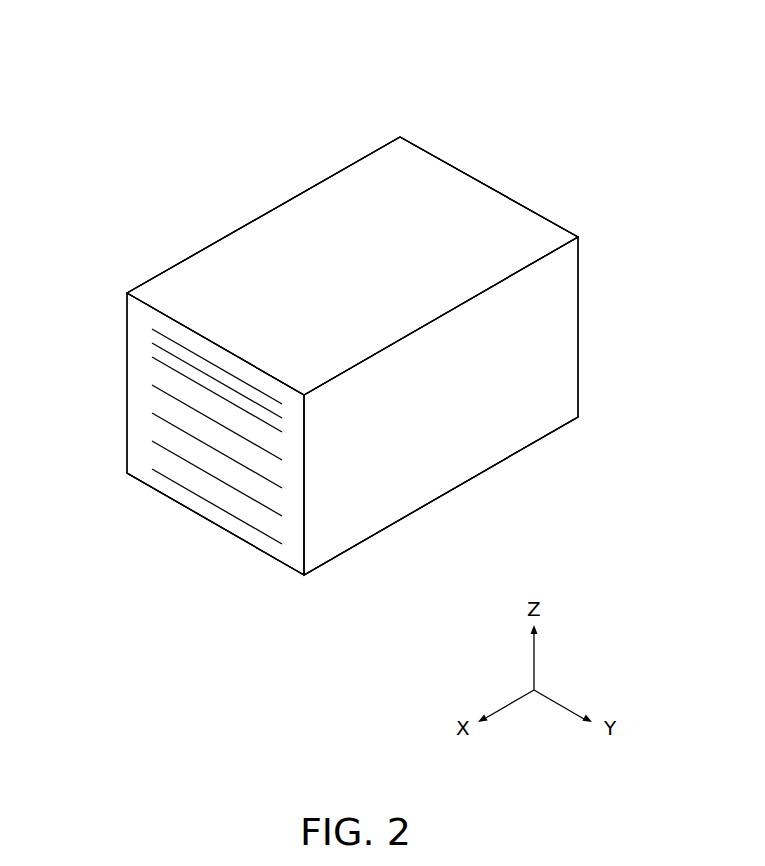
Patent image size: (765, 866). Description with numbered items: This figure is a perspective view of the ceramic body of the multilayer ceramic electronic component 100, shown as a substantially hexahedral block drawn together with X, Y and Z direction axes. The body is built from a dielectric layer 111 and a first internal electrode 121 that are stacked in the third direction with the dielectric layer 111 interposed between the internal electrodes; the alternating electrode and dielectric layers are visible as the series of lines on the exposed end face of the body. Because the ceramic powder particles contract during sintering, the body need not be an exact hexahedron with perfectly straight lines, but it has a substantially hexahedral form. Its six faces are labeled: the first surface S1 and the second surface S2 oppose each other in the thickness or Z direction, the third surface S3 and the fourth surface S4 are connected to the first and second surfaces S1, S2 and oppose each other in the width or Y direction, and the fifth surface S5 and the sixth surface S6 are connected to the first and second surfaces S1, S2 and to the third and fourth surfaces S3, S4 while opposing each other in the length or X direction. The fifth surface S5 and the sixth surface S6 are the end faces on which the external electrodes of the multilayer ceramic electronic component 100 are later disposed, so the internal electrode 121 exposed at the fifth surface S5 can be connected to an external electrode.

The multilayer ceramic electronic component 100 is at (151, 31).
The first surface S1 is at (351, 198).
The second surface S2 is at (360, 523).
The third surface S3 is at (556, 344).
The fourth surface S4 is at (196, 283).
The fifth surface S5 is at (209, 495).
The sixth surface S6 is at (474, 207).
The dielectric layer 111 is at (150, 373).
The first internal electrode 121 is at (152, 329).